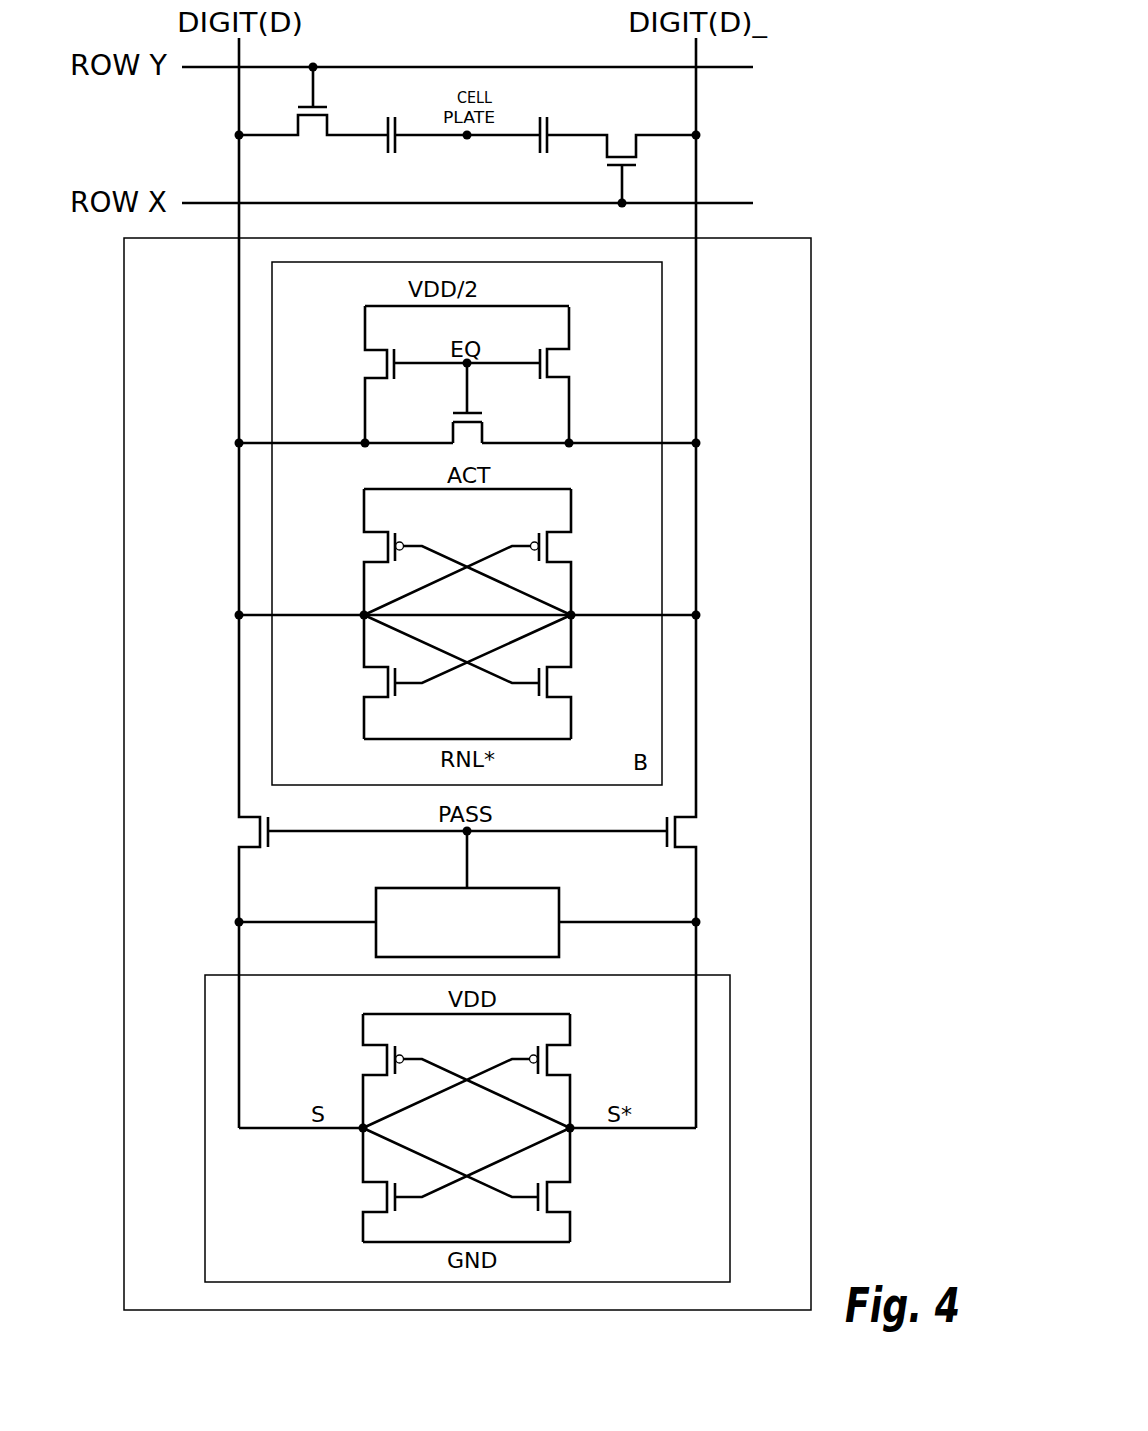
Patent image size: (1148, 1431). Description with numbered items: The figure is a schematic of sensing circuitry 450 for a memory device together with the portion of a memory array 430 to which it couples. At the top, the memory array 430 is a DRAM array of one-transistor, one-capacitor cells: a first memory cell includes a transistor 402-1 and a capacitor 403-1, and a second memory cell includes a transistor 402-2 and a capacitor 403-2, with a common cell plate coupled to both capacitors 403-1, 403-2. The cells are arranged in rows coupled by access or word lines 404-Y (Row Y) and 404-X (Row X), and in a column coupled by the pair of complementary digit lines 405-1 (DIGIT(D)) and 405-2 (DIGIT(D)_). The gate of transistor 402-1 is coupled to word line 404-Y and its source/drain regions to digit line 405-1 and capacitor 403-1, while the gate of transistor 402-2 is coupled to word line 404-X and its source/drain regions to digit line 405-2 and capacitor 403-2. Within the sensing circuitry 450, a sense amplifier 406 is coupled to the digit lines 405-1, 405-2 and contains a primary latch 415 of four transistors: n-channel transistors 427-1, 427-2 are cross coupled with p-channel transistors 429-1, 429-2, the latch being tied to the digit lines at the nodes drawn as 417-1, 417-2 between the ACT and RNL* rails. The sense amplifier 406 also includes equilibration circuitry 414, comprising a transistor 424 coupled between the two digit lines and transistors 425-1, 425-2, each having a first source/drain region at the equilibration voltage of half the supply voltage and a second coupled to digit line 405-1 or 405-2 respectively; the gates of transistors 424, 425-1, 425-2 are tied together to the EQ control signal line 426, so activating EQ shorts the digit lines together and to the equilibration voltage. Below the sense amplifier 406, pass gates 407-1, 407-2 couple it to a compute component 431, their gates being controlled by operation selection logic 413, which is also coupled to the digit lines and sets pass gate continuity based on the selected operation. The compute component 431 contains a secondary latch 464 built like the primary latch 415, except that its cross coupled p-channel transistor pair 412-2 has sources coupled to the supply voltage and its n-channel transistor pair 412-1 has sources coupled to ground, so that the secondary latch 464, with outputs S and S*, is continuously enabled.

The transistor 402-1 is at (327, 122).
The transistor 402-2 is at (606, 145).
The capacitor 403-1 is at (391, 153).
The capacitor 403-2 is at (544, 117).
The access (word) line 404-Y is at (205, 67).
The access (word) line 404-X is at (205, 203).
The digit line 405-1 is at (239, 281).
The digit line 405-2 is at (696, 281).
The sense amplifier 406 is at (272, 335).
The pass gate 407-1 is at (245, 830).
The pass gate 407-2 is at (689, 830).
The secondary latch transistor pair (GND side) 412-1 is at (430, 1242).
The secondary latch transistor pair (VDD side) 412-2 is at (503, 1014).
The operation selection logic 413 is at (413, 888).
The equilibration circuitry 414 is at (360, 469).
The latch 415 is at (360, 759).
The latch input node 417-1 is at (364, 615).
The latch input node 417-2 is at (571, 615).
The transistor 424 is at (470, 433).
The transistor 425-1 is at (372, 367).
The transistor 425-2 is at (563, 367).
The equilibration (EQ) control signal line 426 is at (436, 366).
The n-channel transistor 427-1 is at (372, 683).
The n-channel transistor 427-2 is at (563, 683).
The p-channel transistor 429-1 is at (372, 548).
The p-channel transistor 429-2 is at (563, 548).
The memory array 430 is at (758, 111).
The compute component 431 is at (205, 1055).
The sensing circuitry 450 is at (124, 386).
The secondary latch 464 is at (314, 1188).